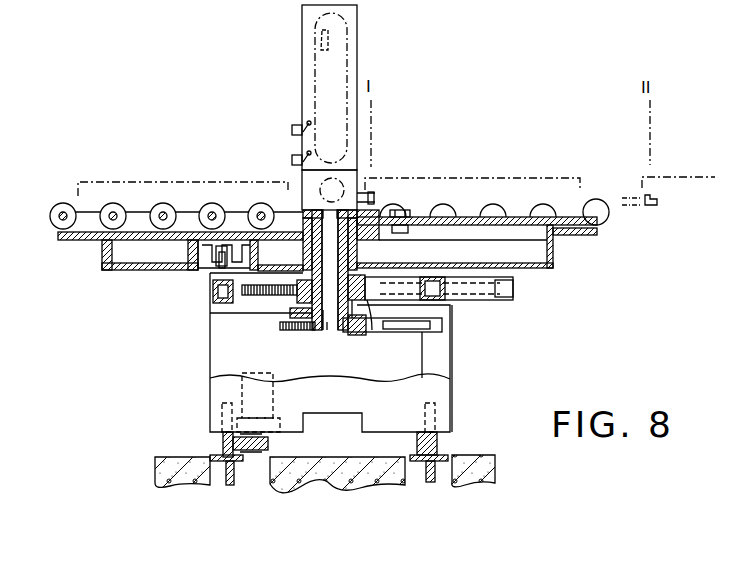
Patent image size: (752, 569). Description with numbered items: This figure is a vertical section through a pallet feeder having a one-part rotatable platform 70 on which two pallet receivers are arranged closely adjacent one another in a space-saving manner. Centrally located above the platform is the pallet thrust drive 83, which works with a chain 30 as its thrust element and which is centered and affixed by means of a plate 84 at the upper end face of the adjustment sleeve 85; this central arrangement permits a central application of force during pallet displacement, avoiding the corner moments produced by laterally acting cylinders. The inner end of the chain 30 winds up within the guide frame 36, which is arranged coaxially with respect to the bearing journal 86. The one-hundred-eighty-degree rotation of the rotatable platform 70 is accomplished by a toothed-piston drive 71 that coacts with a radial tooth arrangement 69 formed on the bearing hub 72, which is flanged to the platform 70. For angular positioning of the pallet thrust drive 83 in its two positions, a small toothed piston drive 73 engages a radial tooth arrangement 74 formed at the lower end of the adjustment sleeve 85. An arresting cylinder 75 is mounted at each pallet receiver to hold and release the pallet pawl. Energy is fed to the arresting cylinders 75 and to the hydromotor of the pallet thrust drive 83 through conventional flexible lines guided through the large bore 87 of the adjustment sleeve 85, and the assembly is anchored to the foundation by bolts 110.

The chain 30 is at (357, 37).
The guide frame 36 is at (302, 36).
The pallet thrust drive 83 is at (283, 131).
The plate 84 is at (292, 216).
The adjustment sleeve 85 is at (333, 332).
The rotatable platform 70 is at (123, 257).
The bearing hub 72 is at (365, 258).
The arresting cylinder 75 is at (410, 232).
The toothed-piston drive 71 is at (496, 292).
The small toothed piston drive 73 is at (428, 331).
The radial tooth arrangement 74 is at (308, 331).
The large bore 87 is at (323, 332).
The bearing journal 86 is at (352, 333).
The radial tooth arrangement 69 is at (368, 313).
The anchor bolts 110 is at (238, 472).